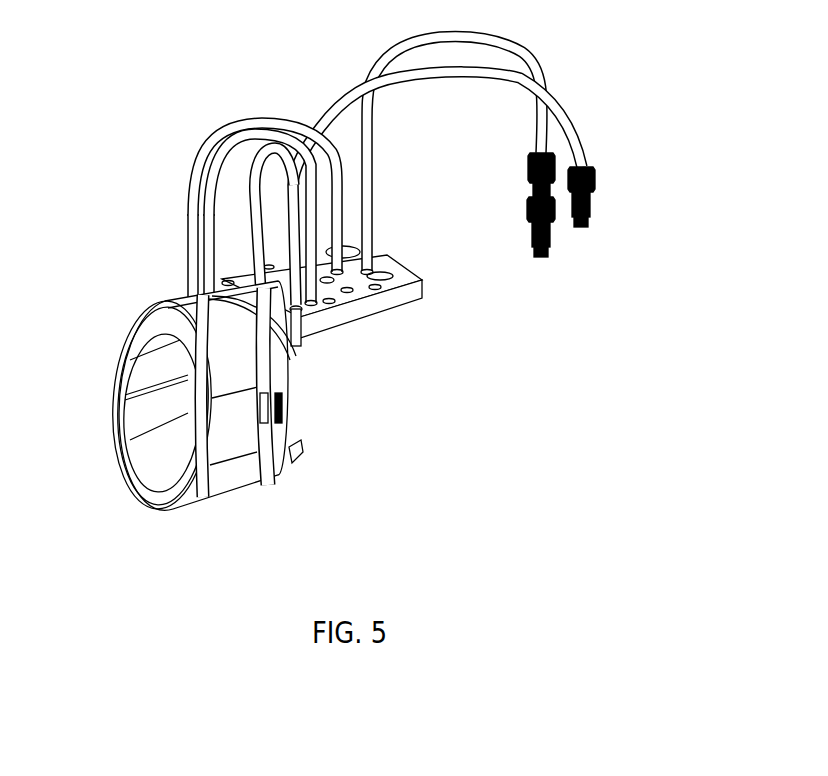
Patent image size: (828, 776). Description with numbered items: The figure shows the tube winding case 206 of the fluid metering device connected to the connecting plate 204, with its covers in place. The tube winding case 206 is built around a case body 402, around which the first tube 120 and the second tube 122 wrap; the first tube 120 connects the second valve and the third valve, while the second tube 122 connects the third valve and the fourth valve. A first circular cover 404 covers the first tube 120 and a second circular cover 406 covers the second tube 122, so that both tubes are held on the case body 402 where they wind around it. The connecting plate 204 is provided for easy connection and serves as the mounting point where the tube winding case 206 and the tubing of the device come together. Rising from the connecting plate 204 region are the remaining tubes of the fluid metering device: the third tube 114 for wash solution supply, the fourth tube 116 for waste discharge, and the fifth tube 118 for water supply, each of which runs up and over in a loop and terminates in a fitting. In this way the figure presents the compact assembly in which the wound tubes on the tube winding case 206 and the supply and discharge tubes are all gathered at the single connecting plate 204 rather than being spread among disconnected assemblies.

The third tube 114 is at (543, 72).
The fourth tube 116 is at (347, 78).
The fifth tube 118 is at (581, 150).
The first tube 120 is at (288, 144).
The second tube 122 is at (205, 262).
The connecting plate 204 is at (402, 298).
The tube winding case 206 is at (353, 311).
The case body 402 is at (123, 342).
The first circular cover 404 is at (275, 462).
The second circular cover 406 is at (217, 482).